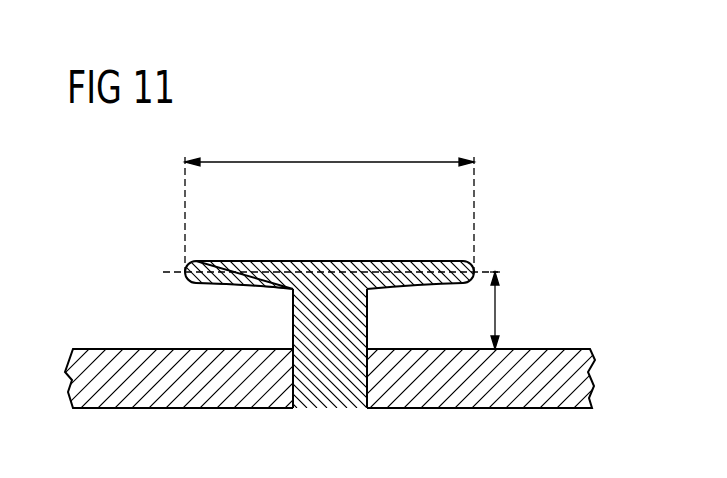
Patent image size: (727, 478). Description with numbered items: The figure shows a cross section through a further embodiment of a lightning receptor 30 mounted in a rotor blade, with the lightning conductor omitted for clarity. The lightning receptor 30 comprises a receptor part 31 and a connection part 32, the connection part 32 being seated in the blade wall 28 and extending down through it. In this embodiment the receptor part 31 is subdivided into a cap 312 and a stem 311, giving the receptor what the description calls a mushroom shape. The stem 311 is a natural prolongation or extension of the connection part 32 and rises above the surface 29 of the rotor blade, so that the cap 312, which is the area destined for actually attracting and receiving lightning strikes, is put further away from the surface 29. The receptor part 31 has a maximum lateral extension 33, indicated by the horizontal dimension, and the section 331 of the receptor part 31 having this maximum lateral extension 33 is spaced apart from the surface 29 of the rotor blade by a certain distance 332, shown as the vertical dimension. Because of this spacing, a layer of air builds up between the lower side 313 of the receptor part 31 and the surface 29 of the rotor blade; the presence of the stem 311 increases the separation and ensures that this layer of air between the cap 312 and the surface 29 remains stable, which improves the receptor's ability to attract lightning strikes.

The component plates 28 is at (118, 361).
The surface of the rotor blade 29 is at (167, 348).
The lightning receptor 30 is at (338, 323).
The receptor part 31 is at (414, 263).
The connection part 32 is at (334, 397).
The maximum lateral extension 33 is at (358, 162).
The stem 311 is at (364, 318).
The cap 312 is at (246, 286).
The lower side of the receptor part 313 is at (193, 287).
The section with the maximum lateral extension 331 is at (185, 271).
The distance 332 is at (497, 311).